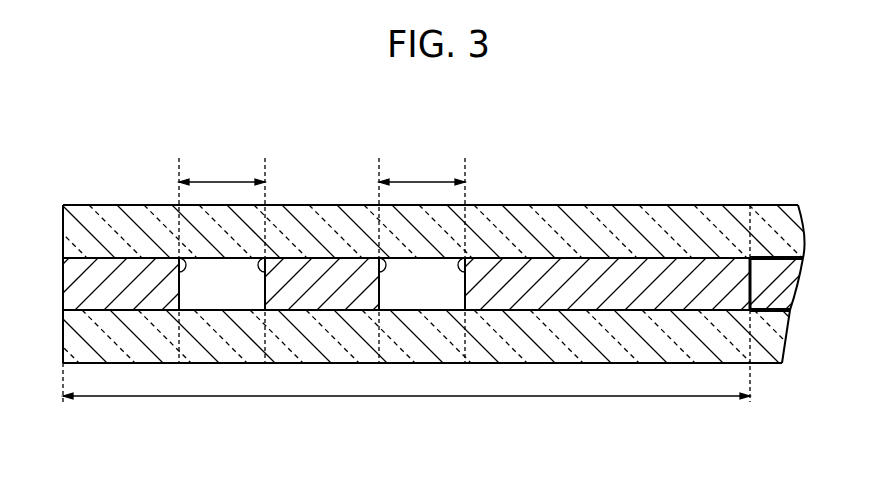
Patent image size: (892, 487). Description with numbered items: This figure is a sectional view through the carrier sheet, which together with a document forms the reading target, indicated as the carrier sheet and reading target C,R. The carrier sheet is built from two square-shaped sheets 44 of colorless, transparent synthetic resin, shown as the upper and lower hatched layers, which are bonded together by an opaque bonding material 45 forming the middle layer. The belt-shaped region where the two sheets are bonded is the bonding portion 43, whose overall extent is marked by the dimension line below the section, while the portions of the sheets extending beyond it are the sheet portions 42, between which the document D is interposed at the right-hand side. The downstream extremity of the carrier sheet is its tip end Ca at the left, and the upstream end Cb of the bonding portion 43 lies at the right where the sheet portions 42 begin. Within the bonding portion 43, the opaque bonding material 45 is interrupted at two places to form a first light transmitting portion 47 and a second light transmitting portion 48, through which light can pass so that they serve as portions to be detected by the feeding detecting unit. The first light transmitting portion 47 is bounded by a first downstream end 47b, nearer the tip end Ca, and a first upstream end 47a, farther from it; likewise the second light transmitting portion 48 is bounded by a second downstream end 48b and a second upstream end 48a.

The sheet portion 42 is at (783, 220).
The bonding portion 43 is at (360, 397).
The square-shaped sheet 44 is at (546, 204).
The opaque bonding material 45 is at (626, 270).
The first light transmitting portion 47 is at (222, 180).
The first upstream end 47a is at (265, 258).
The first downstream end 47b is at (179, 258).
The second light transmitting portion 48 is at (422, 180).
The second upstream end 48a is at (465, 258).
The second downstream end 48b is at (379, 258).
The tip end Ca is at (63, 227).
The upstream end Cb is at (762, 257).
The document D is at (792, 290).
The carrier sheet, reading target C,R is at (122, 102).